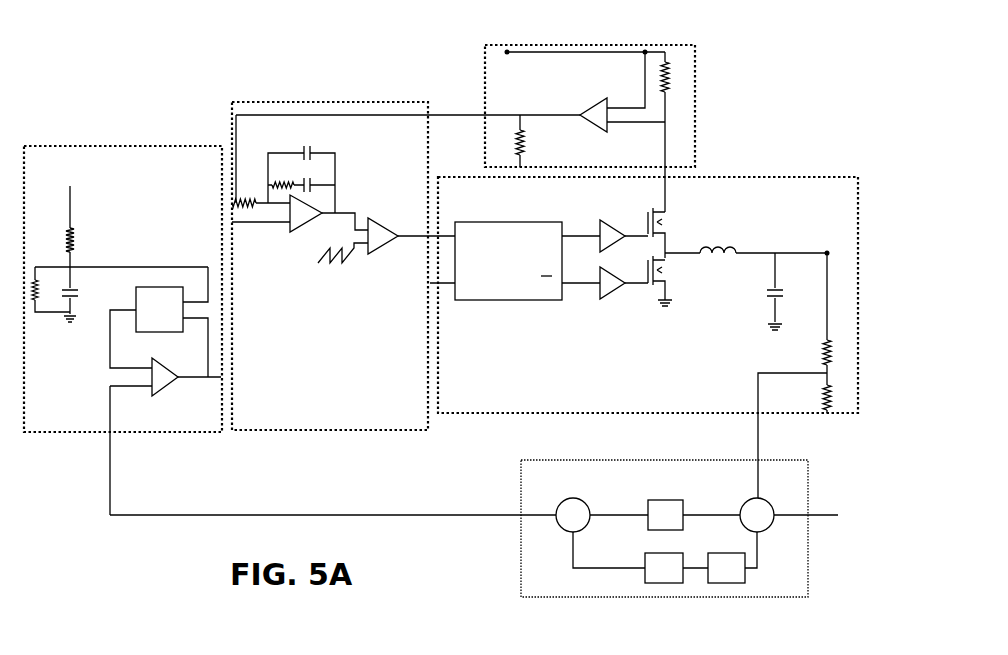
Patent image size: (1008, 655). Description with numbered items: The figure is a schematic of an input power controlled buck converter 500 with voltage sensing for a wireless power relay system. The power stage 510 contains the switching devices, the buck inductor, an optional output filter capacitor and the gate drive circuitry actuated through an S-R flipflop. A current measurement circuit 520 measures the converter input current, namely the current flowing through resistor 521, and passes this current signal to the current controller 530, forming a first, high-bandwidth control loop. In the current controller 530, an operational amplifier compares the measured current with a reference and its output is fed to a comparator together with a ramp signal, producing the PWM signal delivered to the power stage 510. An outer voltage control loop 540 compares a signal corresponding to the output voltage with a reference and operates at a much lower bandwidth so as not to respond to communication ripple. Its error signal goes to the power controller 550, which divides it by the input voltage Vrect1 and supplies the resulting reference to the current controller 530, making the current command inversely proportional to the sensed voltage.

The buck converter 500 is at (194, 60).
The power stage 510 is at (723, 176).
The current measurement circuit 520 is at (590, 109).
The resistor 521 is at (678, 91).
The current controller 530 is at (300, 431).
The outer voltage control loop 540 is at (620, 458).
The power controller 550 is at (130, 433).